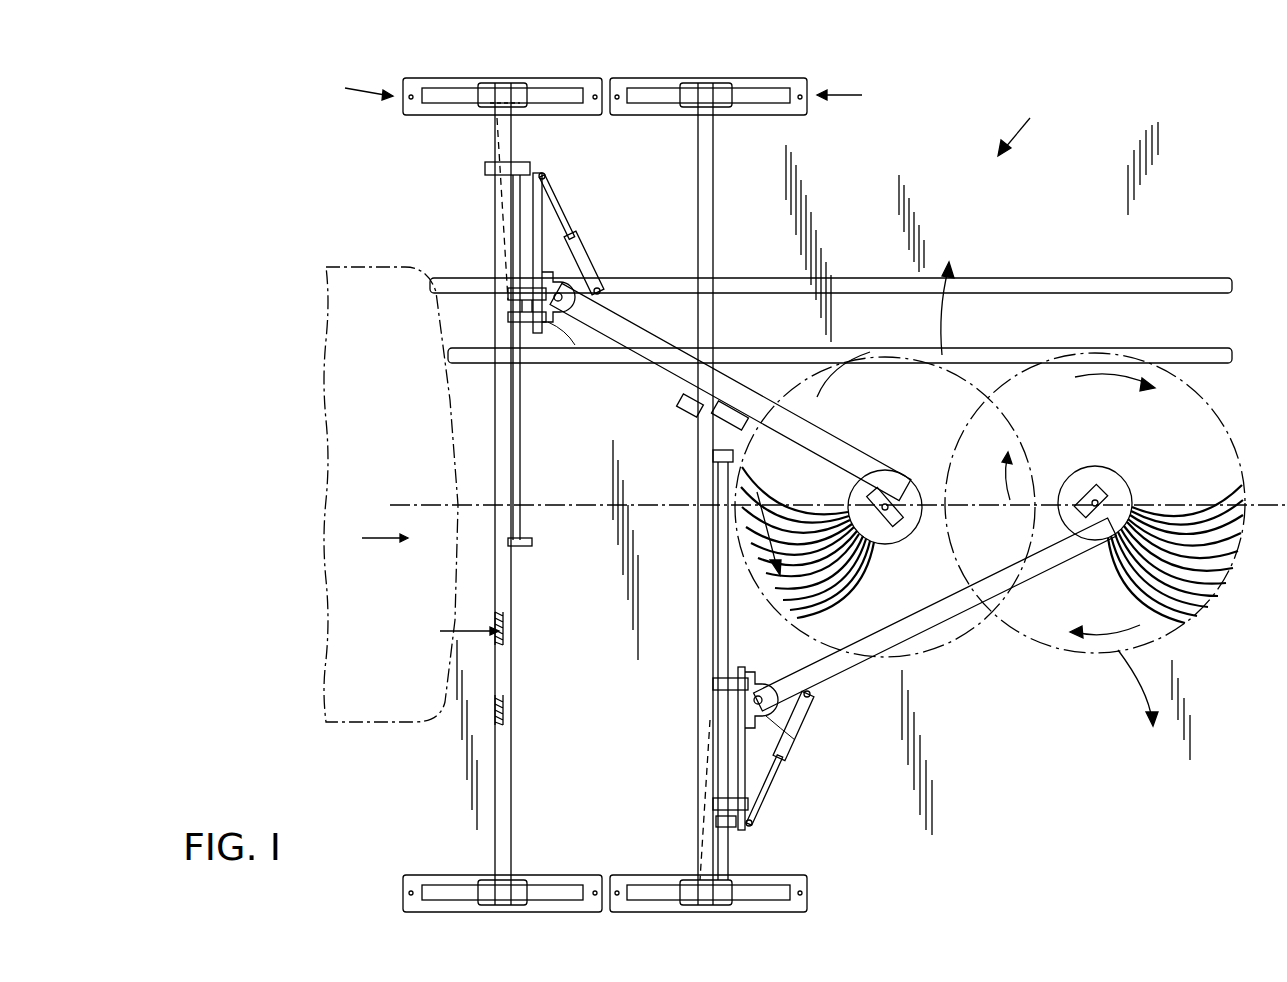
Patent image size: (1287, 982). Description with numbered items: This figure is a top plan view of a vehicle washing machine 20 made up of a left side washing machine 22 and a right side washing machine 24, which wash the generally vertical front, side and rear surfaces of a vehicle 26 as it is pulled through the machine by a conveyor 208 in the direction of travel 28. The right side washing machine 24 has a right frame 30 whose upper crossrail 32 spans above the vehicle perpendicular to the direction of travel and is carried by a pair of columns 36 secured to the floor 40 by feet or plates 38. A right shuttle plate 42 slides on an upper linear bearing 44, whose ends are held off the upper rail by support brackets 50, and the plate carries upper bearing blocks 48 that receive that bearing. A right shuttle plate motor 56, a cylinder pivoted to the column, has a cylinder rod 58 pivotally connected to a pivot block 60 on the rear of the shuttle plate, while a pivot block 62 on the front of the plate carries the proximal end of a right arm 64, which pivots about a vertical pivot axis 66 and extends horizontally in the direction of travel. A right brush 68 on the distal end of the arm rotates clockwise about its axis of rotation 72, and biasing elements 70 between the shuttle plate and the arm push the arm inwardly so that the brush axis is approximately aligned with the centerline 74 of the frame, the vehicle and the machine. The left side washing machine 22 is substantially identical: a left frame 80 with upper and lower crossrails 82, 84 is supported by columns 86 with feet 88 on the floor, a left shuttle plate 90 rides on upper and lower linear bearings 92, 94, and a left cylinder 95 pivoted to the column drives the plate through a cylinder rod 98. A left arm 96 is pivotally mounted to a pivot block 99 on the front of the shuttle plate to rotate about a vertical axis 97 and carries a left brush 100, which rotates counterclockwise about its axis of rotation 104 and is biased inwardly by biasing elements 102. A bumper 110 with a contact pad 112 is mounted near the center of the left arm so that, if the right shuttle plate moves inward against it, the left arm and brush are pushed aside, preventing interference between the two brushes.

The vehicle washing machine 20 is at (1019, 120).
The left side washing machine 22 is at (364, 83).
The right side washing machine 24 is at (855, 97).
The vehicle 26 is at (385, 735).
The direction of travel 28 is at (385, 563).
The right frame 30 is at (720, 262).
The upper crossrail 32 is at (698, 184).
The columns 36 is at (692, 108).
The feet or plates 38 is at (785, 112).
The floor 40 is at (890, 200).
The right shuttle plate 42 is at (750, 770).
The upper linear bearing 44 is at (718, 592).
The upper bearing blocks 48 is at (710, 685).
The support brackets 50 is at (715, 457).
The right shuttle plate motor 56 is at (690, 838).
The cylinder rod 58 is at (730, 718).
The pivot block 60 is at (718, 706).
The pivot block 62 is at (760, 685).
The right arm 64 is at (950, 618).
The pivot axis 66 is at (798, 730).
The right brush 68 is at (1205, 608).
The biasing elements 70 is at (755, 800).
The axis of rotation 72 is at (1098, 502).
The centerline 74 is at (452, 502).
The left frame 80 is at (454, 633).
The upper crossrail 82 is at (517, 592).
The lower crossrail 84 is at (508, 676).
The columns 86 is at (480, 108).
The feet 88 is at (416, 115).
The left shuttle plate 90 is at (543, 218).
The upper linear bearing 92 is at (530, 398).
The lower linear bearing 94 is at (520, 542).
The left cylinder 95 is at (496, 224).
The left arm 96 is at (655, 352).
The vertical axis 97 is at (568, 283).
The cylinder rod 98 is at (518, 302).
The pivot block 99 is at (560, 335).
The left brush 100 is at (990, 352).
The biasing elements 102 is at (582, 255).
The axis of rotation 104 is at (893, 540).
The bumper 110 is at (740, 395).
The contact pad 112 is at (684, 425).
The conveyor 208 is at (1092, 282).